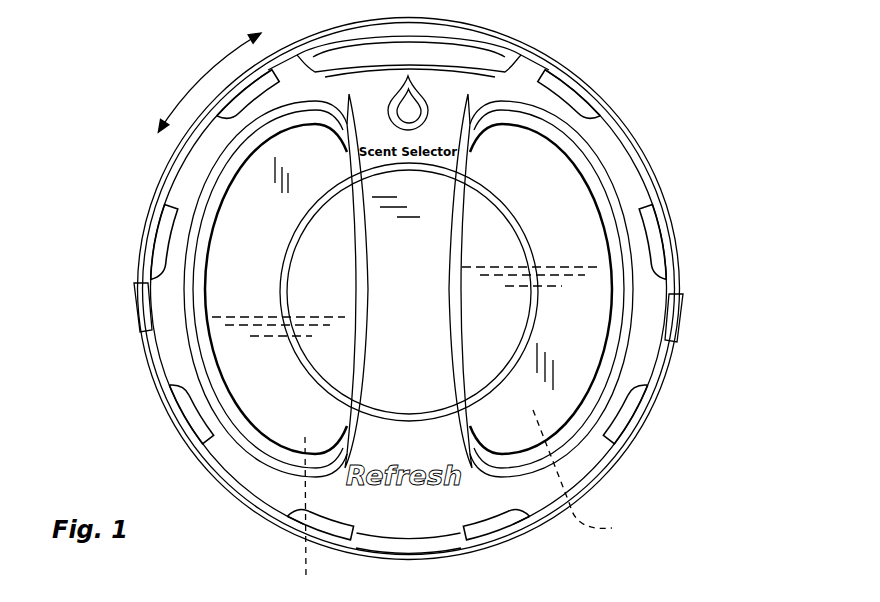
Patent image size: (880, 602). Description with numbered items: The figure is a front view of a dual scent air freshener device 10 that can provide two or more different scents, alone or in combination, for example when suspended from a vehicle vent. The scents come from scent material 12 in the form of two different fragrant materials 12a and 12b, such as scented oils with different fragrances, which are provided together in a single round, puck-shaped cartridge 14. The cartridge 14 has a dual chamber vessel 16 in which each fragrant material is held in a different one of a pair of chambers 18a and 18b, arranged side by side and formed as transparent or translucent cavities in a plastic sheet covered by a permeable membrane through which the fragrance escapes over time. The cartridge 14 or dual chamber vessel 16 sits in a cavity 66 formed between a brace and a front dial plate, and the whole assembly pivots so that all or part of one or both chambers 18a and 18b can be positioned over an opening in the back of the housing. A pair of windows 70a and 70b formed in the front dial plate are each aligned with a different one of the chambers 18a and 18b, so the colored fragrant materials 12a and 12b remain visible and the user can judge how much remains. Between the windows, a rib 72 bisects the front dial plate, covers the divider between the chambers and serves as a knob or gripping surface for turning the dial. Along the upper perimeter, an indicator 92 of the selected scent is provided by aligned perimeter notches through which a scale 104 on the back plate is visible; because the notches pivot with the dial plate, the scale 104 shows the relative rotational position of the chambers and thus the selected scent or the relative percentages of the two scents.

The dual scent air freshener device 10 is at (146, 434).
The scent material 12 is at (408, 575).
The first fragrant material 12a is at (304, 577).
The second fragrant material 12b is at (593, 469).
The cartridge 14 is at (527, 163).
The dual chamber vessel 16 is at (558, 188).
The first chamber 18a is at (258, 213).
The second chamber 18b is at (575, 215).
The cavity 66 is at (277, 402).
The first window 70a is at (233, 281).
The second window 70b is at (582, 327).
The rib 72 is at (432, 330).
The indicator 92 is at (503, 28).
The scale 104 is at (350, 60).